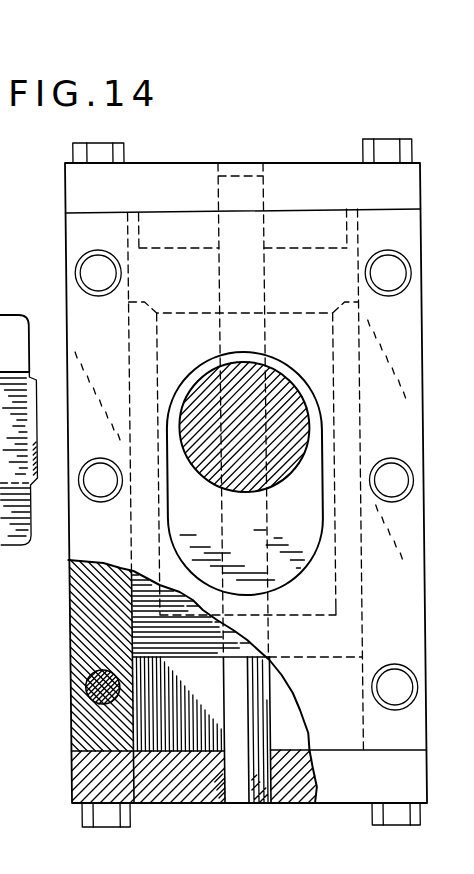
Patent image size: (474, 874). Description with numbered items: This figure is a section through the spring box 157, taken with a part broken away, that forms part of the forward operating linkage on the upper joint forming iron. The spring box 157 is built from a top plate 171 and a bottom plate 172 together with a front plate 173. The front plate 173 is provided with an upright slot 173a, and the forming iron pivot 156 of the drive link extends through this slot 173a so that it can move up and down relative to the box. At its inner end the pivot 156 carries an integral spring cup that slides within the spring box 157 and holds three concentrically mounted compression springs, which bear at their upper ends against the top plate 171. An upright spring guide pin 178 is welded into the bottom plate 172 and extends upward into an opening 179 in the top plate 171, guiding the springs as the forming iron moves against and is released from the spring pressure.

The spring box 157 is at (422, 211).
The top plate 171 is at (192, 148).
The opening 179 is at (264, 172).
The front plate 173 is at (82, 237).
The upright slot 173a is at (174, 543).
The forming iron pivot 156 is at (273, 472).
The bottom plate 172 is at (180, 795).
The spring guide pin 178 is at (248, 803).